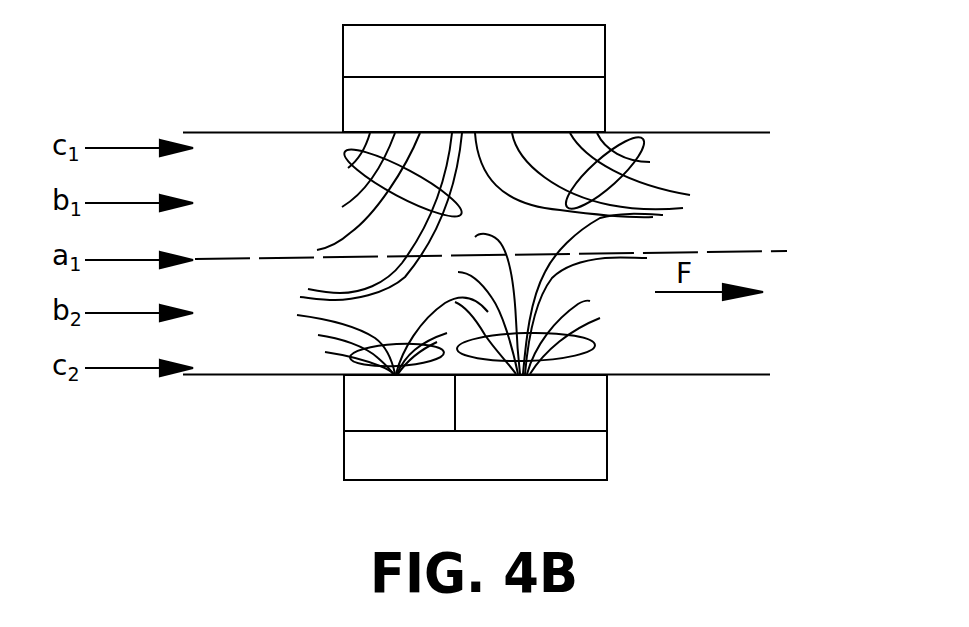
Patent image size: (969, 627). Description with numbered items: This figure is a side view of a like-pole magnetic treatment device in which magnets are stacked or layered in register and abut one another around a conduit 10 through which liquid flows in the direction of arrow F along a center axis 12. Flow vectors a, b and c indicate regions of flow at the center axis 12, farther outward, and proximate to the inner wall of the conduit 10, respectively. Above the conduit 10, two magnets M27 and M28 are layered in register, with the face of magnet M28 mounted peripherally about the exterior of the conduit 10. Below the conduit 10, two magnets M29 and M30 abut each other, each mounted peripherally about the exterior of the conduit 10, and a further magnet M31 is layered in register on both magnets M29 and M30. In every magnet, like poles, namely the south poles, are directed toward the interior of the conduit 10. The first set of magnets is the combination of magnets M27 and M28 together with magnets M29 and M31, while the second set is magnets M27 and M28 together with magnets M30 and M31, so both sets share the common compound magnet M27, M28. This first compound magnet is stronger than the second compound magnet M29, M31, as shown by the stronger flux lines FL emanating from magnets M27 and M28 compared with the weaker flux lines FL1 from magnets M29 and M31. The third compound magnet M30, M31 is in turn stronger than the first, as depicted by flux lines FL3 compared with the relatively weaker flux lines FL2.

The conduit 10 is at (770, 132).
The center axis 12 is at (684, 250).
The magnet M27 is at (606, 25).
The magnet M28 is at (607, 93).
The magnet M29 is at (344, 413).
The magnet M30 is at (607, 413).
The magnet M31 is at (577, 480).
The magnetic flux lines FL is at (345, 150).
The magnetic flux lines FL1 is at (350, 357).
The magnetic flux lines FL2 is at (640, 133).
The magnetic flux lines FL3 is at (588, 356).